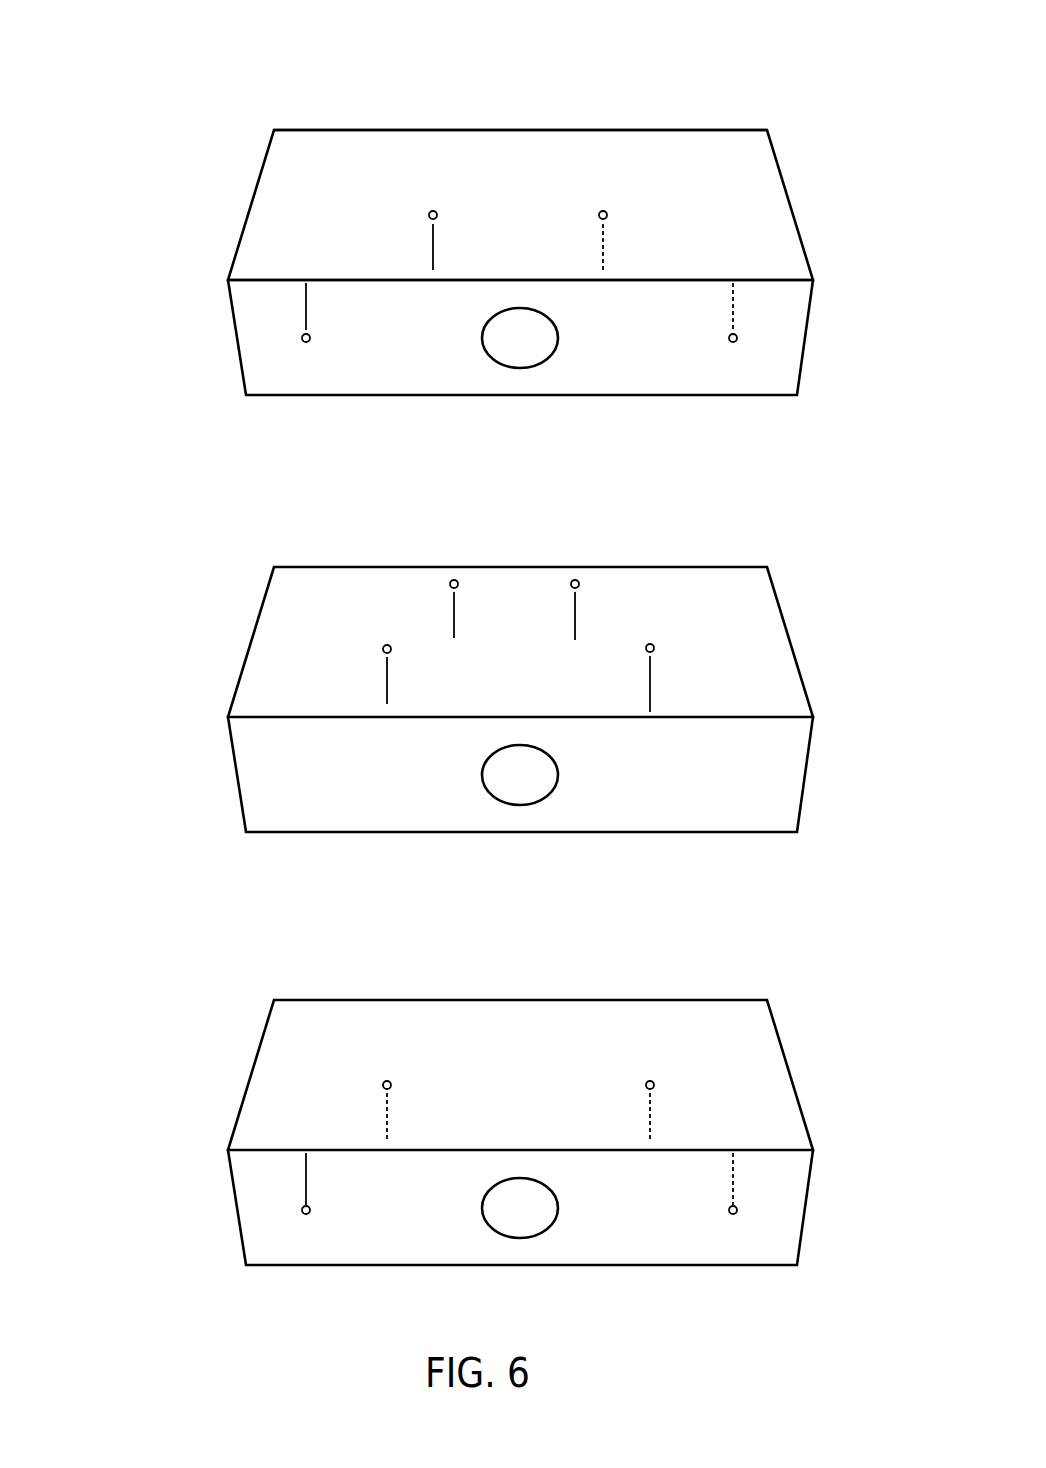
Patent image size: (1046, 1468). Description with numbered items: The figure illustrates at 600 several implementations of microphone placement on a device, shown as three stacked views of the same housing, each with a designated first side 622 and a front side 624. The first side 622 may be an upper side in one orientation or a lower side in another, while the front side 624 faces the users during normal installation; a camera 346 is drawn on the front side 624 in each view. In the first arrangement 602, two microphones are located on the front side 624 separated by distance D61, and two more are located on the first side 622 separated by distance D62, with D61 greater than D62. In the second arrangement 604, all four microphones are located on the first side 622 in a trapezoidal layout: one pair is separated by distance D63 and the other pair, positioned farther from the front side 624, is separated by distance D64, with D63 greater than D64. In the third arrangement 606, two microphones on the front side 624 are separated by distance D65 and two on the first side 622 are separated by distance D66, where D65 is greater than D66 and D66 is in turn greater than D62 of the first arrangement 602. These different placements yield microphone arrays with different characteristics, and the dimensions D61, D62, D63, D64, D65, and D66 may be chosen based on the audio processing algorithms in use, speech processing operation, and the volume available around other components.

The microphone placement implementations 600 is at (818, 48).
The first arrangement 602 is at (293, 98).
The second arrangement 604 is at (293, 538).
The third arrangement 606 is at (293, 955).
The first side 622 is at (545, 157).
The front side 624 is at (662, 360).
The camera 346 is at (438, 1309).
The distance D61 is at (758, 308).
The distance D62 is at (628, 246).
The distance D63 is at (675, 680).
The distance D64 is at (600, 614).
The distance D65 is at (758, 1179).
The distance D66 is at (675, 1115).